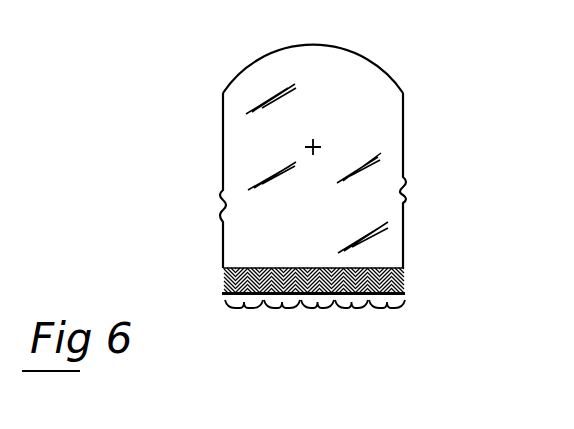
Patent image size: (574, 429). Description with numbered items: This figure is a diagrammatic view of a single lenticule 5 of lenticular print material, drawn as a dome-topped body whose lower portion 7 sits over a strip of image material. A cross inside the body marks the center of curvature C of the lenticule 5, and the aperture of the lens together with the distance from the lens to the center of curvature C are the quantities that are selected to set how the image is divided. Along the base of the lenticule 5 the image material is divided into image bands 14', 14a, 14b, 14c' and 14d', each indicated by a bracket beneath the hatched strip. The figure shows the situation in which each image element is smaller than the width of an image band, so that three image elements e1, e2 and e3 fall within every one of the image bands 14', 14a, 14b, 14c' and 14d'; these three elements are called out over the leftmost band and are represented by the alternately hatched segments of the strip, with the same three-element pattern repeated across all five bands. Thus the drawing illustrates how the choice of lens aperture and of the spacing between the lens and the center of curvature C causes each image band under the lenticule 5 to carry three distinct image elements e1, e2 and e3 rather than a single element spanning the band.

The lenticule 5 is at (256, 68).
The envelope side wall 7 is at (392, 243).
The center of curvature C is at (318, 143).
The image element e1 is at (227, 268).
The image element e2 is at (243, 268).
The image element e3 is at (258, 268).
The image band 14d' is at (233, 345).
The image band 14c' is at (277, 345).
The image band 14b is at (316, 311).
The image band 14a is at (350, 311).
The image band 14' is at (397, 345).